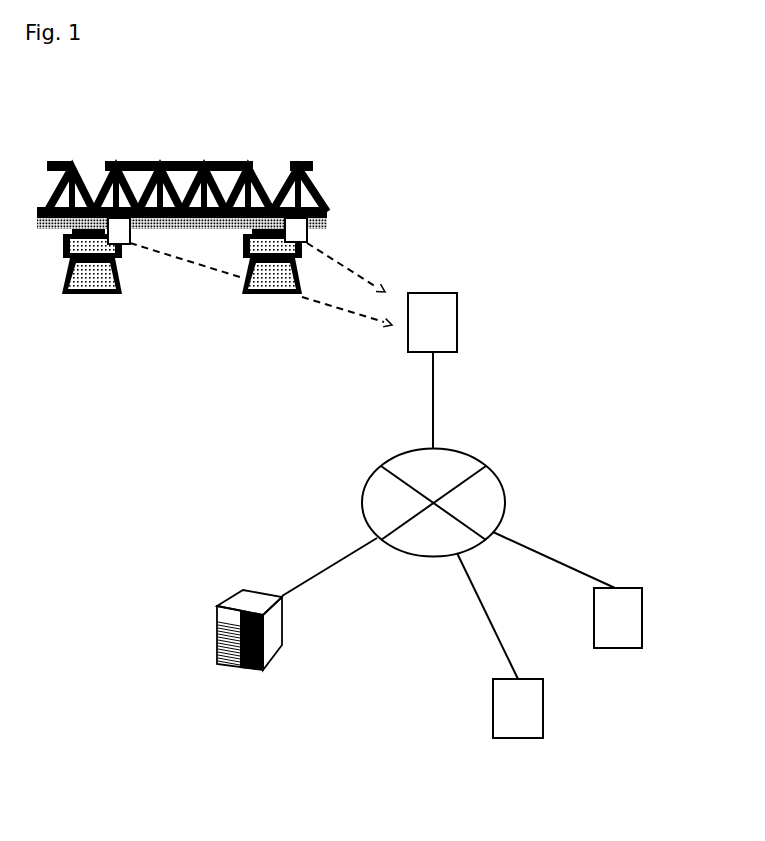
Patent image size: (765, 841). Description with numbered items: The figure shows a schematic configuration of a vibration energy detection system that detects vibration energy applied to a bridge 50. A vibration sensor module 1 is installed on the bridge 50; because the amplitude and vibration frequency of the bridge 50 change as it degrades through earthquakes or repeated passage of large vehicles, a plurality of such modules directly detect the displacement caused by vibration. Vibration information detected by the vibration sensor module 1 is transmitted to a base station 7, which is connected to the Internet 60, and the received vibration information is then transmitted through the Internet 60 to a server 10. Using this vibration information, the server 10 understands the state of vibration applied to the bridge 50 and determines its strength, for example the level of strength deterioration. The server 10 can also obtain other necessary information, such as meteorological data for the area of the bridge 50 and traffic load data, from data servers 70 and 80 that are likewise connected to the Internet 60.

The bridge 50 is at (313, 167).
The vibration sensor module 1 is at (129, 232).
The base station 7 is at (457, 322).
The Internet 60 is at (505, 503).
The server 10 is at (281, 645).
The data server 70 is at (642, 617).
The data server 80 is at (543, 709).